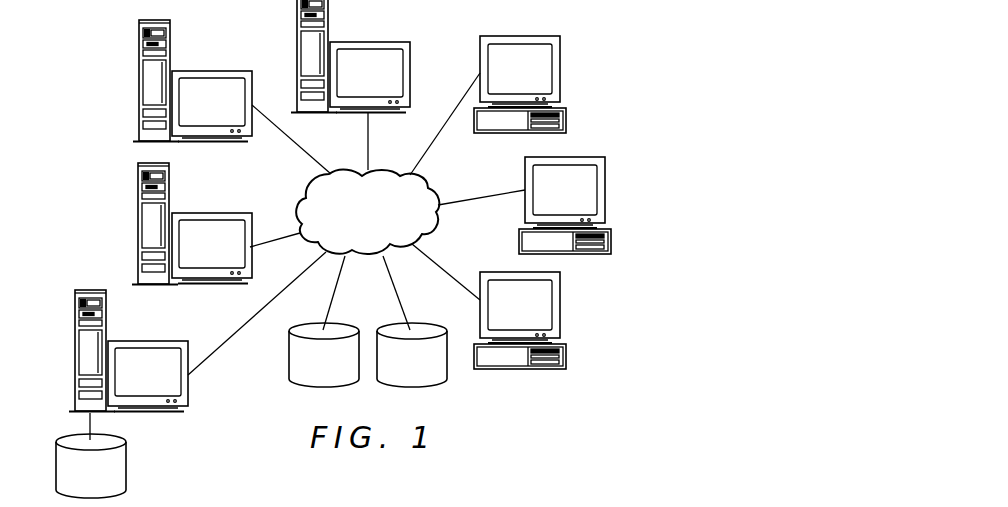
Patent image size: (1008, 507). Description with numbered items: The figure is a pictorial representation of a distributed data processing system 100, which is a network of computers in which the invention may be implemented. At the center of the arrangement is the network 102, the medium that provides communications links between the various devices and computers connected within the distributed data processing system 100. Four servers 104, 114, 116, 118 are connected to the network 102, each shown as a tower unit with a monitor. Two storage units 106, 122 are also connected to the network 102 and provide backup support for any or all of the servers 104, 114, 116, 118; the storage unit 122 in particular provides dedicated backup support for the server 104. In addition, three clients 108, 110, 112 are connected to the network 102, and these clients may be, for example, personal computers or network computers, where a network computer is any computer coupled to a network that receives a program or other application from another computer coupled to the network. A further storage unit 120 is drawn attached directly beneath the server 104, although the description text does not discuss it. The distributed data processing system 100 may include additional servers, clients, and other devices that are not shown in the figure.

The distributed data processing system 100 is at (608, 387).
The network 102 is at (352, 225).
The server 104 is at (73, 351).
The storage unit 106 is at (396, 369).
The client 108 is at (560, 70).
The client 110 is at (605, 192).
The client 112 is at (557, 308).
The server 114 is at (137, 222).
The server 116 is at (137, 80).
The server 118 is at (296, 28).
The storage unit 120 is at (75, 480).
The storage unit 122 is at (308, 369).